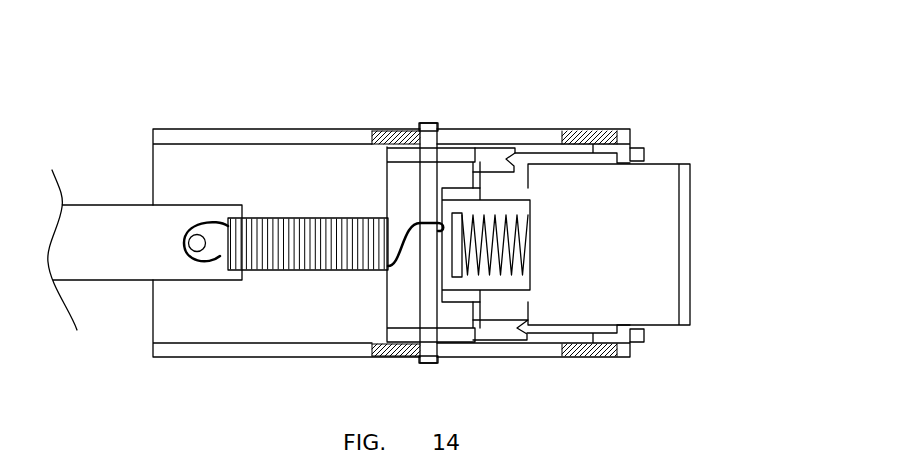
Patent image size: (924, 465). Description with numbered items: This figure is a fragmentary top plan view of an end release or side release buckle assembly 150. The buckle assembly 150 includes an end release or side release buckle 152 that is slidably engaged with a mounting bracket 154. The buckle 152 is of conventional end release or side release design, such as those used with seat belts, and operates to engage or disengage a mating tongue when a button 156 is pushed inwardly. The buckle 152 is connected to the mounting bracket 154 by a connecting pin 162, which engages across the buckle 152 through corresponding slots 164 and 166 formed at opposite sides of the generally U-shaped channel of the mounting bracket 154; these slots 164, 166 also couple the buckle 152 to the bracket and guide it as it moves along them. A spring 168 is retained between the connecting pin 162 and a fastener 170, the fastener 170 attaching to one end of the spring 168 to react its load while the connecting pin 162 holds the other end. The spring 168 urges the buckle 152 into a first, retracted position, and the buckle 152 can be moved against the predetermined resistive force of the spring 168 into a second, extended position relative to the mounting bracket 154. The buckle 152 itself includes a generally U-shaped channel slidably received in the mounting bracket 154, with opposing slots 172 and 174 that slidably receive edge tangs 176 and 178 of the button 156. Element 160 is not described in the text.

The end release buckle assembly 150 is at (684, 64).
The end release buckle 152 is at (463, 181).
The mounting bracket 154 is at (207, 129).
The button 156 is at (690, 237).
The carriage bracket 160 is at (443, 188).
The connecting pin 162 is at (420, 125).
The slot 164 is at (438, 360).
The slot 166 is at (445, 130).
The spring 168 is at (283, 216).
The fastener 170 is at (182, 228).
The slot 172 is at (633, 345).
The slot 174 is at (633, 147).
The edge tang 176 is at (543, 333).
The edge tang 178 is at (537, 153).